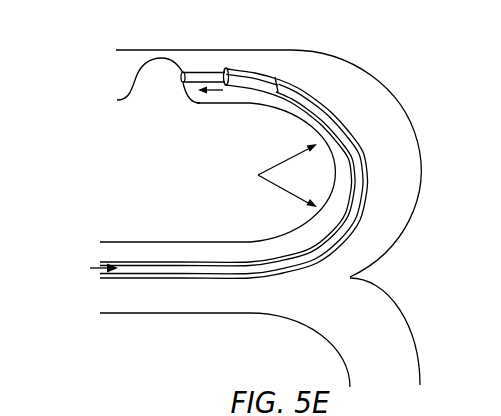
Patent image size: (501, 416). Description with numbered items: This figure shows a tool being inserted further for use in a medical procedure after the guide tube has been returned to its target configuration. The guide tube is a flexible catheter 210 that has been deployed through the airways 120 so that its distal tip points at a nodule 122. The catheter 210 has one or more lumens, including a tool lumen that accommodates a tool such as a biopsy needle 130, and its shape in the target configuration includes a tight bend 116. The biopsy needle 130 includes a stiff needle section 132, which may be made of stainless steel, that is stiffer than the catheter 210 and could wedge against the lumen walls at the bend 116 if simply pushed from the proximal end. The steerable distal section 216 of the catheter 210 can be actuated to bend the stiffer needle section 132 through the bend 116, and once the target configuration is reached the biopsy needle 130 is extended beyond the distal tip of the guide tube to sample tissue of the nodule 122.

The airways 120 is at (421, 168).
The nodule 122 is at (148, 95).
The needle section 132 is at (203, 70).
The steerable distal section 216 is at (240, 69).
The biopsy needle 130 is at (312, 247).
The catheter 210 is at (224, 278).
The bend 116 is at (269, 175).